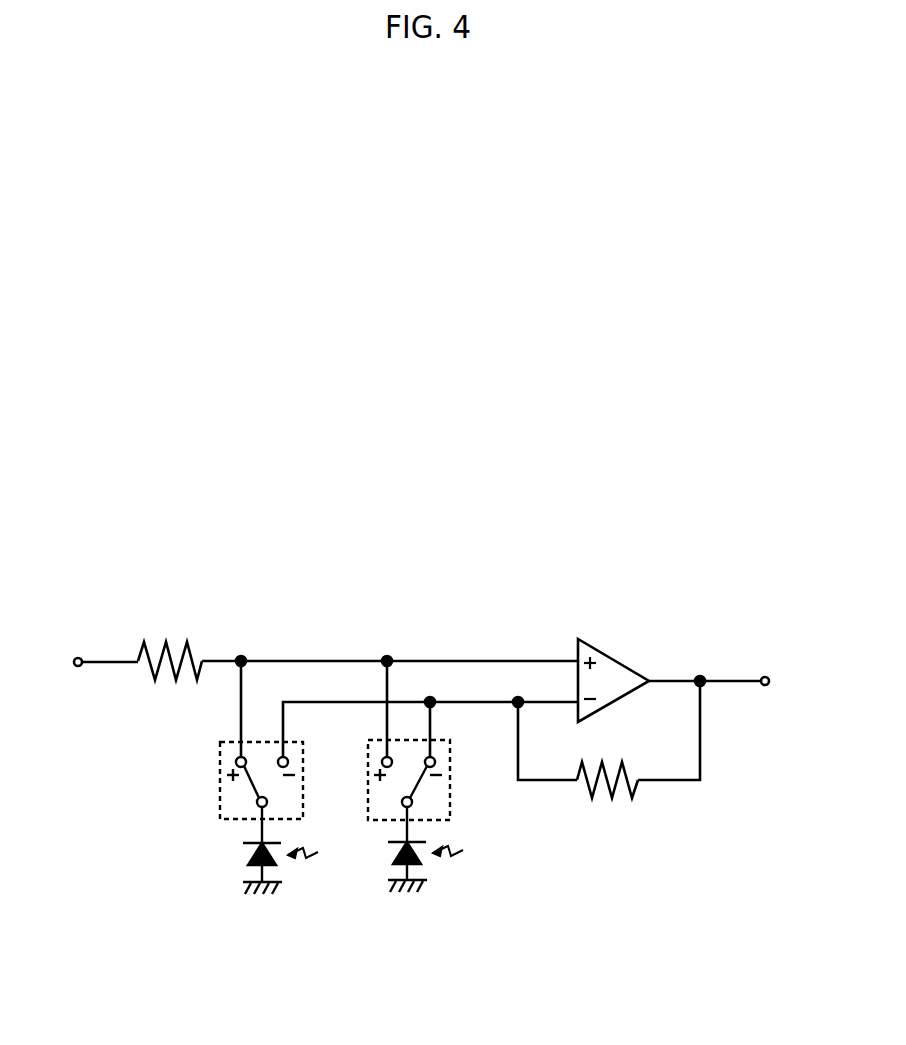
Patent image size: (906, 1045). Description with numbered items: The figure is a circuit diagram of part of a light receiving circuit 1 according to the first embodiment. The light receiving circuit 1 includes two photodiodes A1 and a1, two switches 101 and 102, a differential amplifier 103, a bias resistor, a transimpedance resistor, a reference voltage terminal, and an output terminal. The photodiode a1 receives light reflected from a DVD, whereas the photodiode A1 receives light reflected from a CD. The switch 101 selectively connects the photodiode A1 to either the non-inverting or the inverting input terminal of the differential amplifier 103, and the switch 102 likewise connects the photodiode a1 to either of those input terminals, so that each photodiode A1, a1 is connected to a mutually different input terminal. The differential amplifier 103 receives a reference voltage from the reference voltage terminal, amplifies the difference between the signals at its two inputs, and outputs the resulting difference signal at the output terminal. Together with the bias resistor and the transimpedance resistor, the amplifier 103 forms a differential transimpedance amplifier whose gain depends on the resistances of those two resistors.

The light receiving circuit 1 is at (445, 409).
The switch 101 is at (220, 770).
The switch 102 is at (368, 773).
The differential amplifier 103 is at (613, 655).
The photodiode A1 is at (265, 868).
The photodiode a1 is at (410, 867).